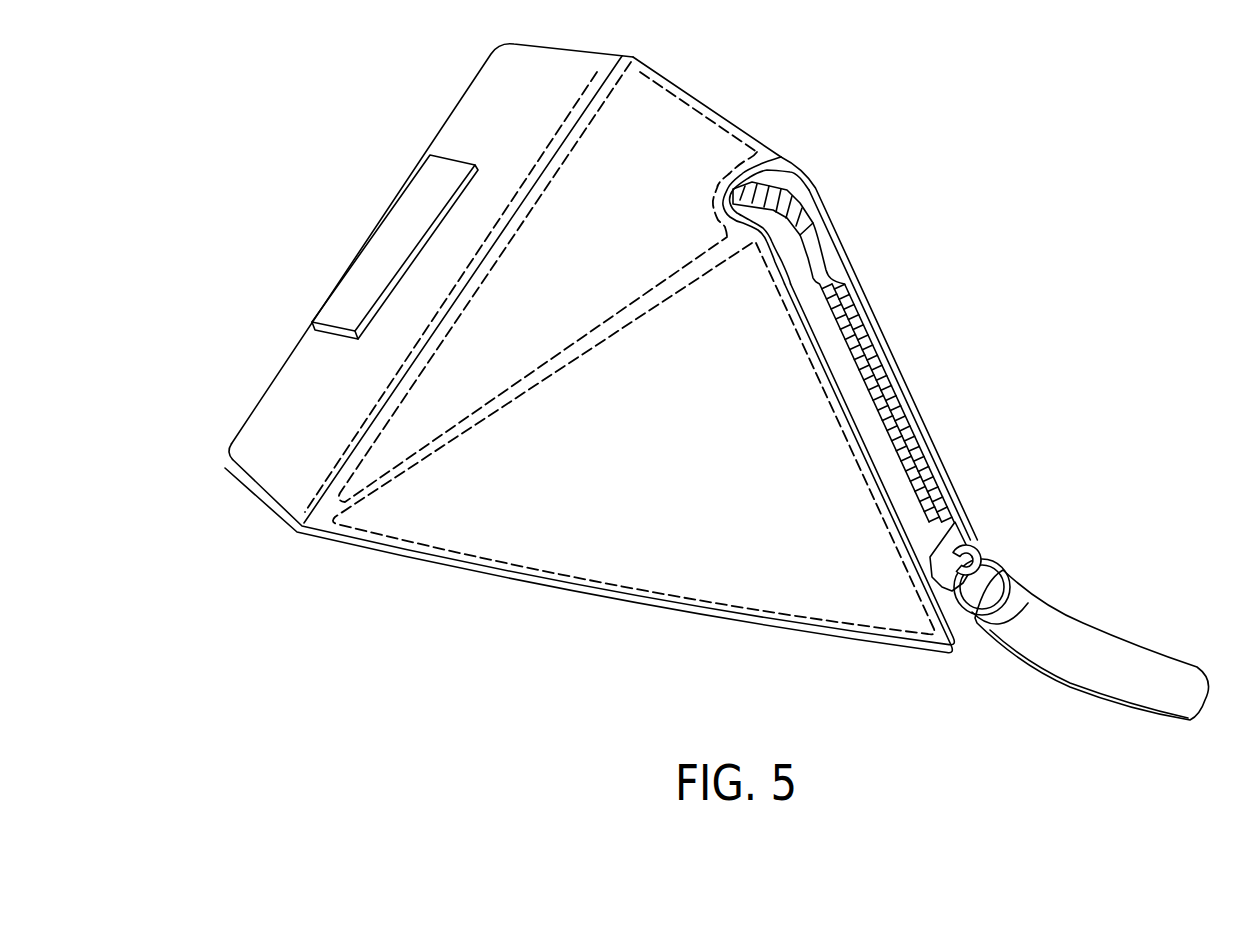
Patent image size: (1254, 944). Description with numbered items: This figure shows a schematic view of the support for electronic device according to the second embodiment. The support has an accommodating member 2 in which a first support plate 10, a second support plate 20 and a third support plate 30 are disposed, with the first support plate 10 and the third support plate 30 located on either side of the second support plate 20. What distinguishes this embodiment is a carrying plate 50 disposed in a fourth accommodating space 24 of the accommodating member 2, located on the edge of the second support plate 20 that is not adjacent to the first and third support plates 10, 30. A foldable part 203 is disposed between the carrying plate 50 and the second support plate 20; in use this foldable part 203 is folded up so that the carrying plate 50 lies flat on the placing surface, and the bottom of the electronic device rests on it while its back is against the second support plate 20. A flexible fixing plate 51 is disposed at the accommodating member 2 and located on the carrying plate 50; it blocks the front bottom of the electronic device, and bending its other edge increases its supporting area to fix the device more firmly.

The accommodating member 2 is at (957, 332).
The first support plate 10 is at (838, 230).
The second support plate 20 is at (562, 279).
The fourth accommodating space 24 is at (223, 475).
The third support plate 30 is at (657, 462).
The carrying plate 50 is at (493, 103).
The fixing plate 51 is at (393, 253).
The foldable part 203 is at (323, 483).